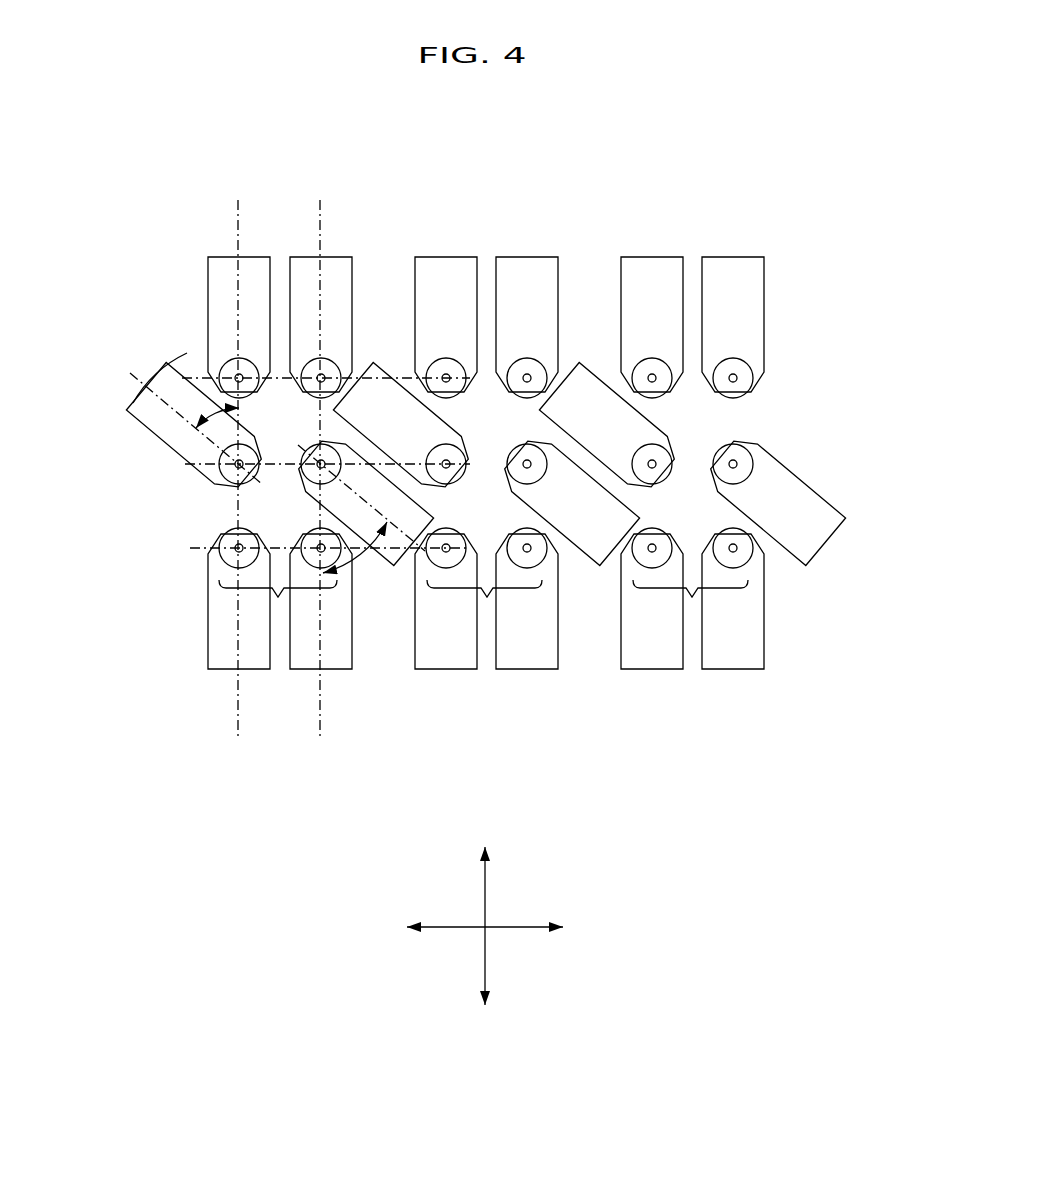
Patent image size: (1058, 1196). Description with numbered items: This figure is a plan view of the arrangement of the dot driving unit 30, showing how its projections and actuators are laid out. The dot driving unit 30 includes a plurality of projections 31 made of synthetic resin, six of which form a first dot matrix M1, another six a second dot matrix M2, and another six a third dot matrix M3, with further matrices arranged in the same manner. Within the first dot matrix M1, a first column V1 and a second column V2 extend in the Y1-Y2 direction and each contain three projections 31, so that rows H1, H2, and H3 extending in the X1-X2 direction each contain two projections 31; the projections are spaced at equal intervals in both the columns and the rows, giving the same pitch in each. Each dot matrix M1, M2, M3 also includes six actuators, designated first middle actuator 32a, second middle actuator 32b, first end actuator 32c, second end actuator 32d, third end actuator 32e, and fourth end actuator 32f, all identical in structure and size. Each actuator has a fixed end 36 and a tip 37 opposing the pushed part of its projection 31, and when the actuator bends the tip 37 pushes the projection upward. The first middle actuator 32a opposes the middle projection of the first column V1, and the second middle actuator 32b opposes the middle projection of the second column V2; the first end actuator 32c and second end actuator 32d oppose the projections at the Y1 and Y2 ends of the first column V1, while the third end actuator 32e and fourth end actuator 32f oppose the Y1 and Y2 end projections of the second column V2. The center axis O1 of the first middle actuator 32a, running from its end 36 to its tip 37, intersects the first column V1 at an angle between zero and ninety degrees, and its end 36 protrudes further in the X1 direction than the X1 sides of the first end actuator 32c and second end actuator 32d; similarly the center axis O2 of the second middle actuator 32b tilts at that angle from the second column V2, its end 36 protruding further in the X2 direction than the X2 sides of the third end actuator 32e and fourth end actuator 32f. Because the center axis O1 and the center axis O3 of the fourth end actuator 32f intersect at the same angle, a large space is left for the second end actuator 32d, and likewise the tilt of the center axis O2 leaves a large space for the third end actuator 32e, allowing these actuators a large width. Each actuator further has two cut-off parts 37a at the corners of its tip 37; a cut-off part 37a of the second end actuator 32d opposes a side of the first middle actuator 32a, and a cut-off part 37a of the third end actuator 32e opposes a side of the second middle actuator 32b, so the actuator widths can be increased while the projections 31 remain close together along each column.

The dot driving unit 30 is at (810, 444).
The projection 31 is at (326, 358).
The first middle actuator 32a is at (392, 560).
The second middle actuator 32b is at (127, 415).
The first end actuator 32c is at (330, 270).
The second end actuator 32d is at (332, 655).
The third end actuator 32e is at (220, 270).
The fourth end actuator 32f is at (222, 657).
The fixed end 36 is at (130, 388).
The tip 37 is at (318, 440).
The cut-off part 37a is at (420, 387).
The row H1 is at (205, 375).
The row H2 is at (183, 460).
The row H3 is at (200, 550).
The first column V1 is at (318, 520).
The second column V2 is at (237, 500).
The center axis O1 is at (320, 474).
The center axis O2 is at (168, 385).
The center axis O3 is at (240, 632).
The first dot matrix M1 is at (278, 598).
The second dot matrix M2 is at (487, 598).
The third dot matrix M3 is at (692, 598).
The X1 direction X1 is at (544, 927).
The X2 direction X2 is at (430, 927).
The Y1 direction Y1 is at (484, 872).
The Y2 direction Y2 is at (484, 986).